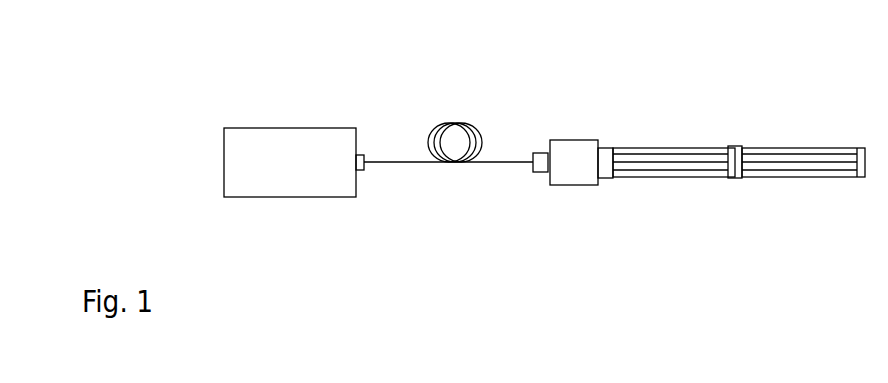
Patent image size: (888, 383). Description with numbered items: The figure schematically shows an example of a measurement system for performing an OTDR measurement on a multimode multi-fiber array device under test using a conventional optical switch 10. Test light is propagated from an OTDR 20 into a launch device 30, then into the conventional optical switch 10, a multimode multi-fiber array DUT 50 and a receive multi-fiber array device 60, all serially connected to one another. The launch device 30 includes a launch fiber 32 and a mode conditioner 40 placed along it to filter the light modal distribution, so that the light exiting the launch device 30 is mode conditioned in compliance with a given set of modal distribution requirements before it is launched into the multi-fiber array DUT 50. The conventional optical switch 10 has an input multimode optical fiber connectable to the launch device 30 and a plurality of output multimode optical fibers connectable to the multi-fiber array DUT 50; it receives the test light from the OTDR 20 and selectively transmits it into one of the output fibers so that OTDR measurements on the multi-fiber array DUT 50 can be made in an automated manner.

The conventional optical switch 10 is at (605, 202).
The OTDR 20 is at (291, 127).
The launch device 30 is at (453, 160).
The launch fiber 32 is at (500, 161).
The mode conditioner 40 is at (452, 124).
The multimode multi-fiber array DUT 50 is at (735, 202).
The receive multi-fiber array device 60 is at (865, 202).